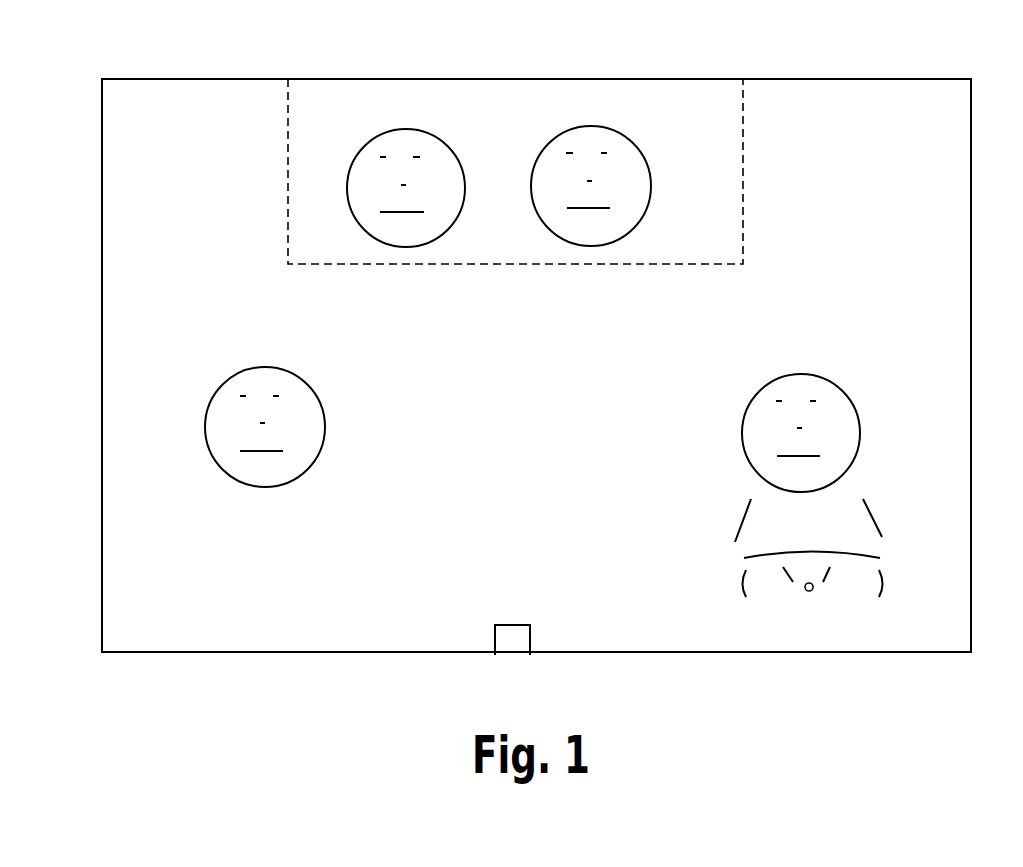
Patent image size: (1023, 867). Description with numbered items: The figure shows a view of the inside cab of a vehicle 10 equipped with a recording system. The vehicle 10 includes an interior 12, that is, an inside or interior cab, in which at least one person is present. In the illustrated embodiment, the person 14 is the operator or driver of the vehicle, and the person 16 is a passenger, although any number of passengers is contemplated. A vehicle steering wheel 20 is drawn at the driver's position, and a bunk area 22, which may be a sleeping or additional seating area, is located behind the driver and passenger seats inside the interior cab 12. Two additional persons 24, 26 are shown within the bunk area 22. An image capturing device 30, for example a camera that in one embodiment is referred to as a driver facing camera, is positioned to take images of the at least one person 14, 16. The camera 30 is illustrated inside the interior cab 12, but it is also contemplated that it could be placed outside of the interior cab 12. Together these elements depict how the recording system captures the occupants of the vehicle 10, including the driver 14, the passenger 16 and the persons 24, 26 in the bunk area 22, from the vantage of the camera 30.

The vehicle 10 is at (856, 79).
The interior 12 is at (858, 191).
The person 14 is at (835, 382).
The person 16 is at (298, 376).
The vehicle steering wheel 20 is at (885, 583).
The bunk area 22 is at (713, 212).
The person 24 is at (439, 136).
The person 26 is at (625, 134).
The image capturing device 30 is at (523, 621).